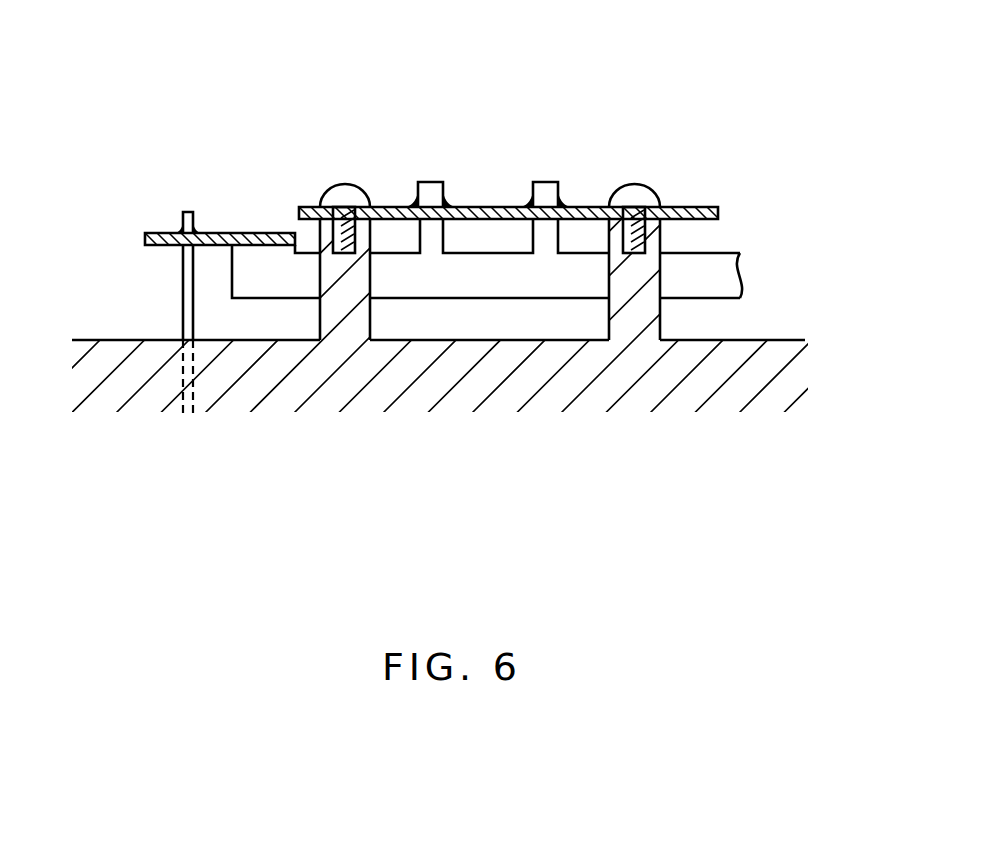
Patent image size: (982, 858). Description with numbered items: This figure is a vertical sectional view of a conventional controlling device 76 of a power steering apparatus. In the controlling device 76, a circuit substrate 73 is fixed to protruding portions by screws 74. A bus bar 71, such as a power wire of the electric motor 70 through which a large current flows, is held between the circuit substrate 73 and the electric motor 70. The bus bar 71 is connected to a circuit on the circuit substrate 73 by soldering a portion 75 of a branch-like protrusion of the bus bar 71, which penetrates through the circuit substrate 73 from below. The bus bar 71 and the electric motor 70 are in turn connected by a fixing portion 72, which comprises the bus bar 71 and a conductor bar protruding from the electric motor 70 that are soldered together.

The electric motor 70 is at (610, 393).
The bus bar 71 is at (737, 278).
The fixing portion 72 is at (198, 222).
The circuit substrate 73 is at (703, 205).
The screws 74 is at (631, 200).
The portion of a branch-like protrusion of the bus bar 75 is at (530, 197).
The controlling device 76 is at (583, 95).